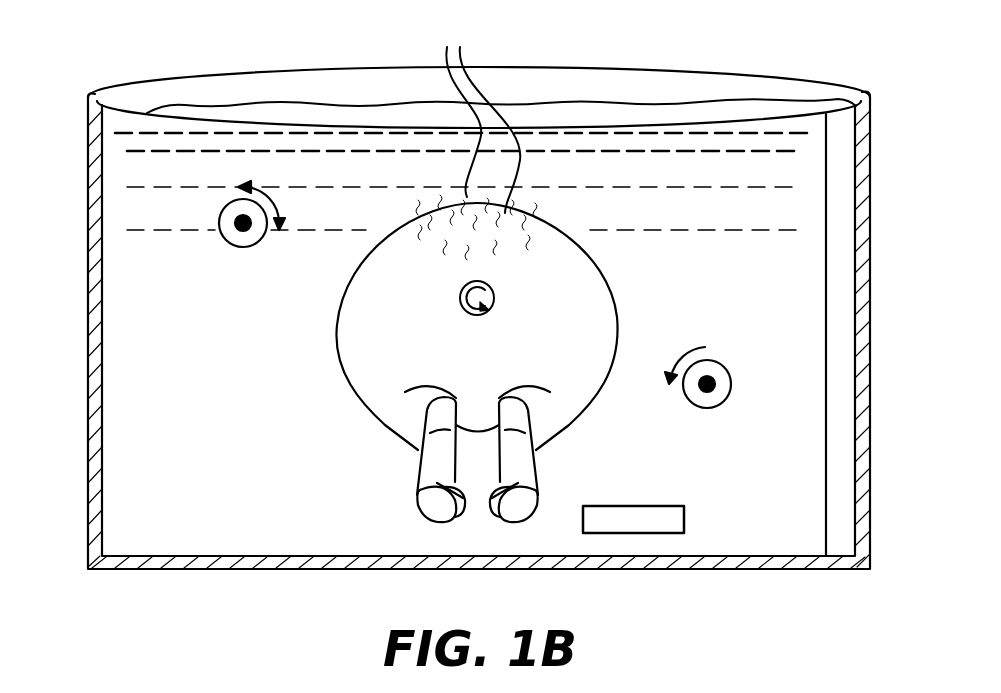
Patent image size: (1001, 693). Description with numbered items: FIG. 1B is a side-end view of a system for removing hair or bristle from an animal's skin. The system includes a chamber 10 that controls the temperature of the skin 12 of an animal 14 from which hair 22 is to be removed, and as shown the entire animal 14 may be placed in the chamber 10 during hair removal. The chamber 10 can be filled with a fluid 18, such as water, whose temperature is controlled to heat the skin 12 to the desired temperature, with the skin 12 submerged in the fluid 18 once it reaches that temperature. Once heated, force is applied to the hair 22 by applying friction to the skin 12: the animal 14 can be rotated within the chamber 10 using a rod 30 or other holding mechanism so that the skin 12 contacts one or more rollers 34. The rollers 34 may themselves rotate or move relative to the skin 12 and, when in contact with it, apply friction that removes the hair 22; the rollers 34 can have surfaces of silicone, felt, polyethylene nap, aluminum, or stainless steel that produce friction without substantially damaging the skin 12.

The chamber 10 is at (82, 288).
The skin 12 is at (560, 333).
The animal 14 is at (656, 266).
The fluid 18 is at (750, 96).
The hair 22 is at (476, 139).
The rod 30 is at (495, 296).
The rollers 34 is at (243, 247).